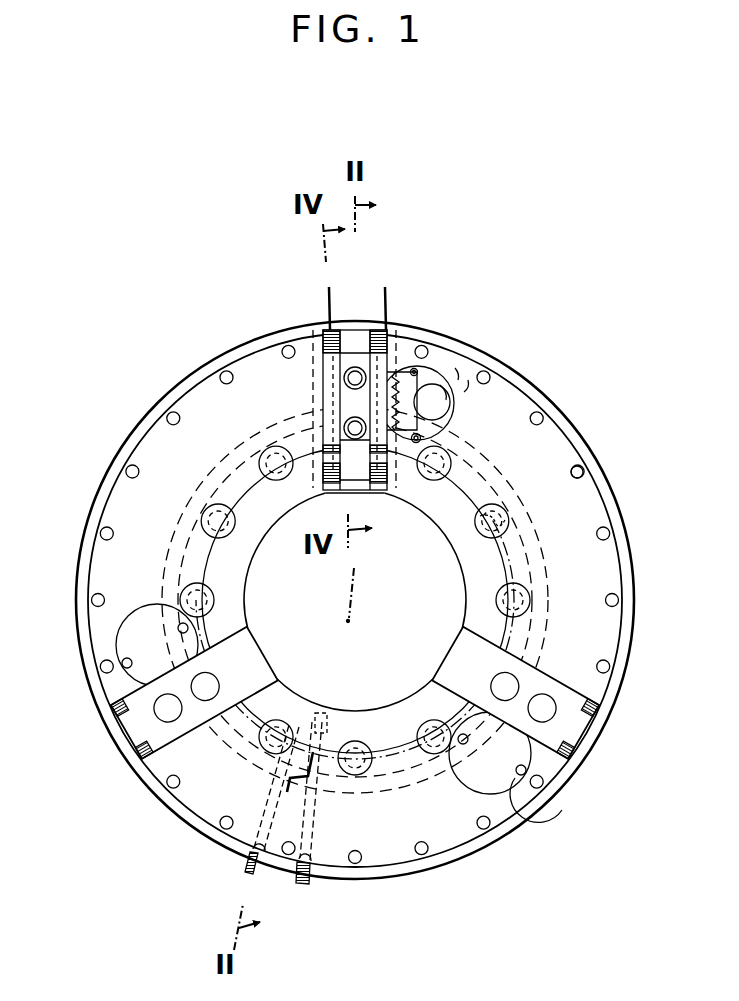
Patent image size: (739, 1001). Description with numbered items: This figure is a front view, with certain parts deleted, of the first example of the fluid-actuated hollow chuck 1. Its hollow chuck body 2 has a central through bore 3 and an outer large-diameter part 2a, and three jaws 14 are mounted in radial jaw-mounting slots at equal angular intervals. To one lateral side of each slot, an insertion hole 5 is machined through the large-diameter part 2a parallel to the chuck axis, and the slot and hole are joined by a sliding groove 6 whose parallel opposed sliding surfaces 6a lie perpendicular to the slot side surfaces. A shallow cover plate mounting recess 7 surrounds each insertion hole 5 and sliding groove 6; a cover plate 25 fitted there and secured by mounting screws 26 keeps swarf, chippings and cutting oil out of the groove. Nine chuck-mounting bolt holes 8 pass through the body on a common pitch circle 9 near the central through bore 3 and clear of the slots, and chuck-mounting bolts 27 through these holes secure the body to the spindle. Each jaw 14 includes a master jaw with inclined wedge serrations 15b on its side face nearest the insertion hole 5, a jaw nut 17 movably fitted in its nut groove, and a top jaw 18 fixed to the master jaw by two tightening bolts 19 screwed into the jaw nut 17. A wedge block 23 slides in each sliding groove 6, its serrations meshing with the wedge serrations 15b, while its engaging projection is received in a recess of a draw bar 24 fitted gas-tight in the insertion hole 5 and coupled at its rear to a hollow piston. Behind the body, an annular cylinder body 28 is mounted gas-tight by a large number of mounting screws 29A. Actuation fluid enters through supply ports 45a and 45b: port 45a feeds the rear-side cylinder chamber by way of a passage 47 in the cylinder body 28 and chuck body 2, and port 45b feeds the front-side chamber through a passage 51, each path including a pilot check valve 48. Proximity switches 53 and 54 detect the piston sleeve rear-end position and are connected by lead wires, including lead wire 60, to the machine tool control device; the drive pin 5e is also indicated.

The fluid-actuated hollow chuck 1 is at (592, 394).
The hollow chuck body 2 is at (565, 427).
The large-diameter part 2a is at (583, 467).
The central through bore 3 is at (459, 565).
The insertion hole 5 is at (470, 384).
The drive pin 5e is at (384, 306).
The sliding groove 6 is at (446, 388).
The sliding surfaces 6a is at (397, 372).
The cover plate mounting recess 7 is at (459, 372).
The chuck-mounting bolt holes 8 is at (508, 516).
The pitch circle 9 is at (522, 578).
The jaw 14 is at (336, 308).
The wedge serrations 15b is at (419, 370).
The jaw nut 17 is at (344, 390).
The top jaw 18 is at (591, 739).
The tightening bolts 19 is at (512, 678).
The wedge block 23 is at (436, 376).
The draw bar 24 is at (454, 406).
The cover plate 25 is at (118, 640).
The mounting screws 26 is at (568, 782).
The chuck-mounting bolts 27 is at (530, 600).
The annular cylinder body 28 is at (633, 572).
The mounting screws 29A is at (610, 486).
The supply port 45a is at (250, 856).
The supply port 45b is at (312, 872).
The passage 47 is at (272, 797).
The guide block 48 is at (333, 740).
The passage 51 is at (327, 814).
The proximity switch 53 is at (355, 386).
The proximity switch 54 is at (313, 350).
The lead wire 60 is at (327, 298).